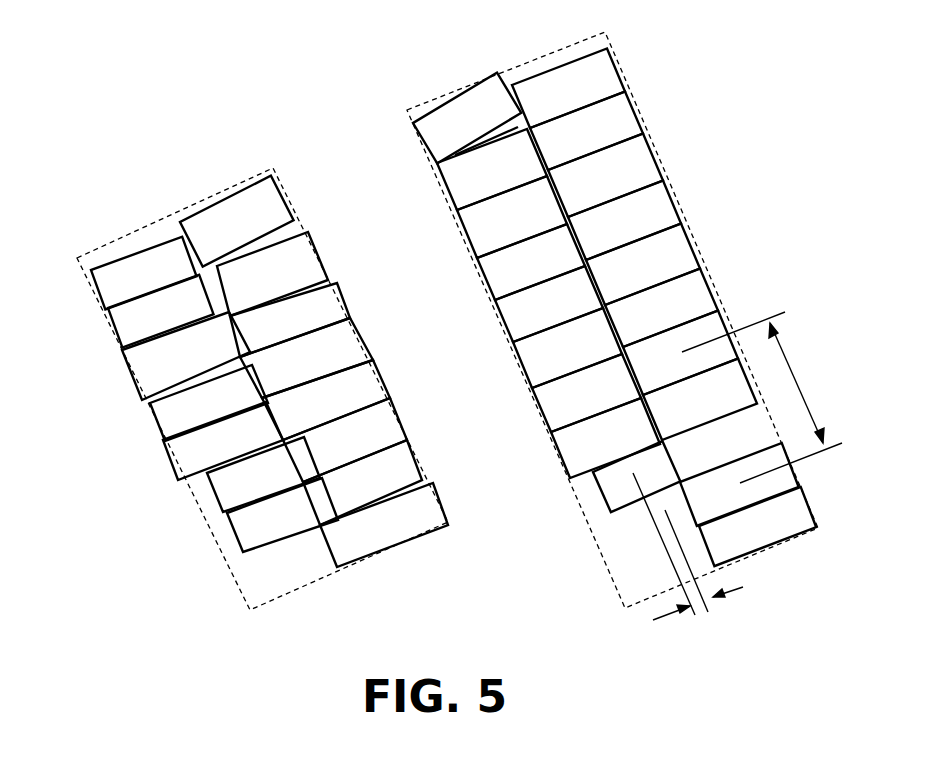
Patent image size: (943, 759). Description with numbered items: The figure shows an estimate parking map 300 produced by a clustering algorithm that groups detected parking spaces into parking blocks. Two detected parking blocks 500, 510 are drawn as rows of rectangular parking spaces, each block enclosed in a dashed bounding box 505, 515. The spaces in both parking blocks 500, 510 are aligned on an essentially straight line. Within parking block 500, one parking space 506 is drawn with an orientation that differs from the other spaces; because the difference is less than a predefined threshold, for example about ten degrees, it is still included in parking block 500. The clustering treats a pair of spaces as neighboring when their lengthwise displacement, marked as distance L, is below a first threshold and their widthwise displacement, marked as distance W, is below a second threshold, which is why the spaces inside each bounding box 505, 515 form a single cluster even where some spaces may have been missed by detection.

The estimate parking map 300 is at (467, 651).
The parking block 500 is at (607, 30).
The bounding box 505 is at (409, 116).
The parking space 506 is at (460, 117).
The parking block 510 is at (68, 258).
The bounding box 515 is at (97, 254).